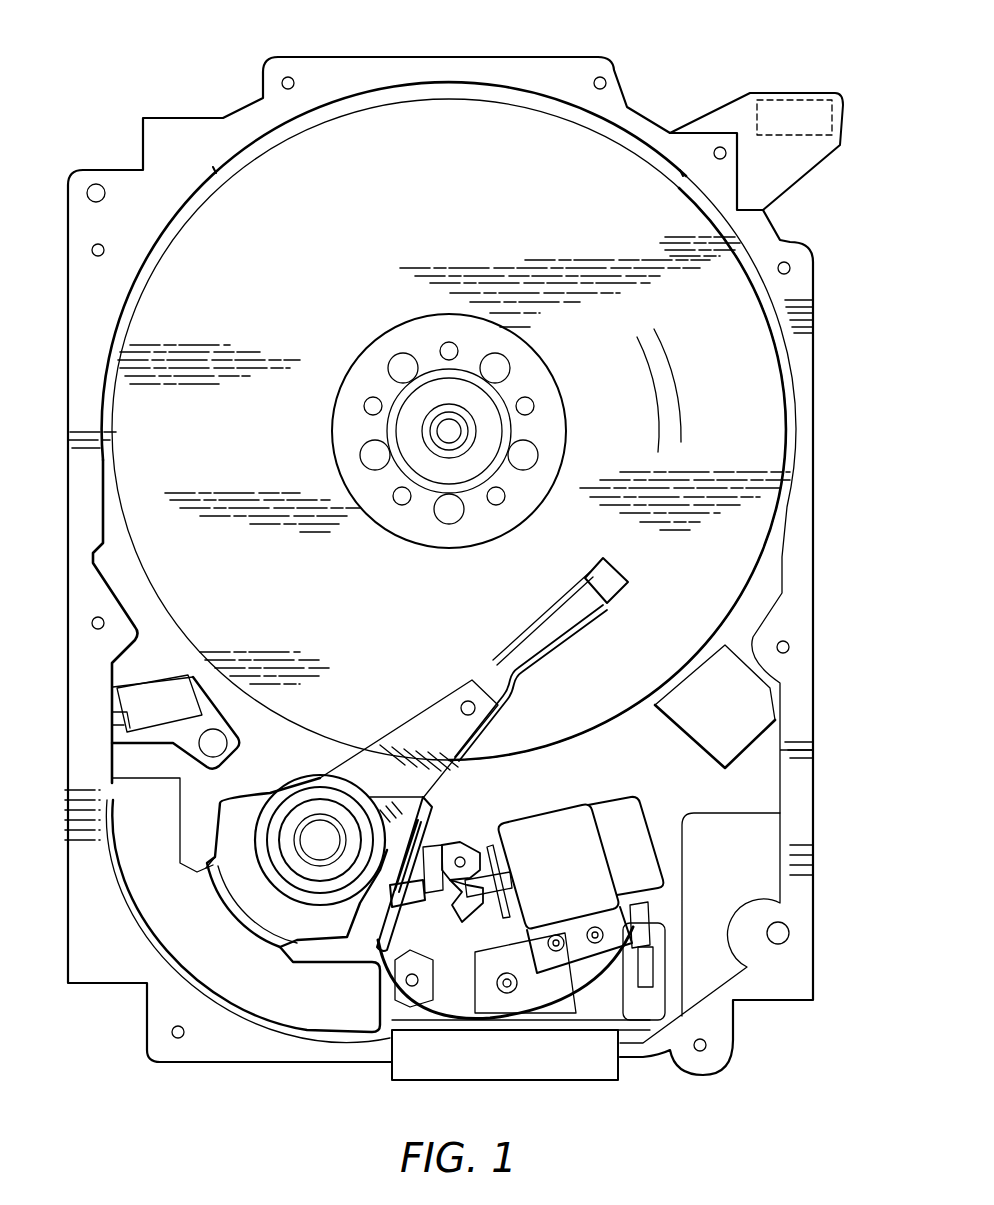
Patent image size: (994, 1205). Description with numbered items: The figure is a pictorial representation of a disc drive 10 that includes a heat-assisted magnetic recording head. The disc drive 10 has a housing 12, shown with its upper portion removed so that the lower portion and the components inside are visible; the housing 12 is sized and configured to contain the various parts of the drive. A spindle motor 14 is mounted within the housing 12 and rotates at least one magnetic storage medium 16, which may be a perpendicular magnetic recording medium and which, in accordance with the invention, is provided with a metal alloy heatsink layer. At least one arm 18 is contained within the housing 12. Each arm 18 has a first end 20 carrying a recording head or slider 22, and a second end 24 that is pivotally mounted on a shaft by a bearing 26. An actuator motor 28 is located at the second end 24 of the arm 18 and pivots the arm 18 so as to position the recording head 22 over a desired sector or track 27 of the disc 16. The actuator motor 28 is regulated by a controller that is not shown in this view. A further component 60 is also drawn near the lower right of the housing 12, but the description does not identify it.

The disc drive 10 is at (439, 552).
The housing 12 is at (580, 70).
The spindle motor 14 is at (443, 435).
The magnetic storage medium 16 is at (362, 229).
The arm 18 is at (436, 720).
The first end 20 is at (552, 612).
The recording head 22 is at (620, 568).
The second end 24 is at (345, 778).
The bearing 26 is at (310, 818).
The track 27 is at (665, 372).
The actuator motor 28 is at (212, 957).
The filter component 60 is at (705, 735).